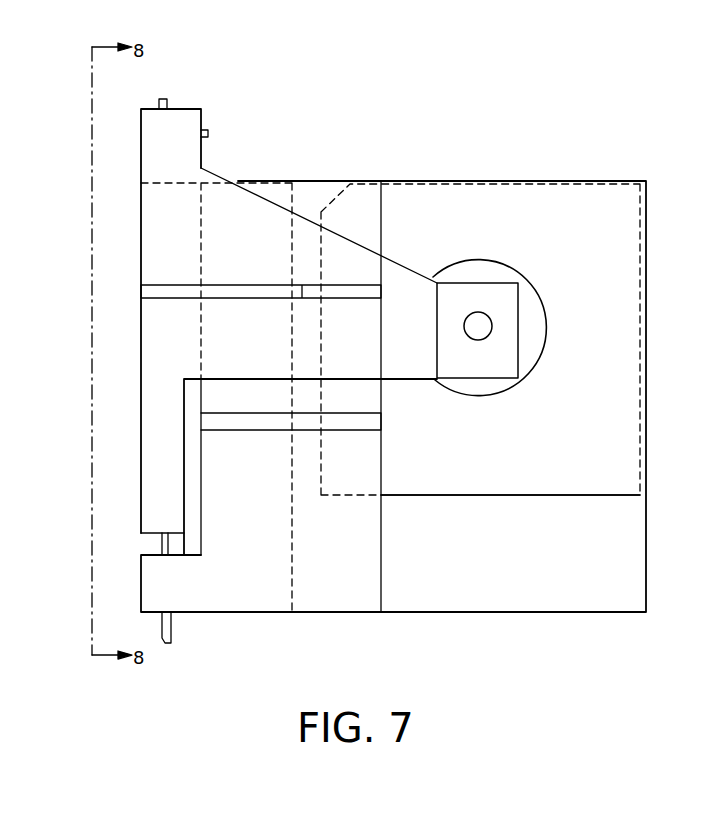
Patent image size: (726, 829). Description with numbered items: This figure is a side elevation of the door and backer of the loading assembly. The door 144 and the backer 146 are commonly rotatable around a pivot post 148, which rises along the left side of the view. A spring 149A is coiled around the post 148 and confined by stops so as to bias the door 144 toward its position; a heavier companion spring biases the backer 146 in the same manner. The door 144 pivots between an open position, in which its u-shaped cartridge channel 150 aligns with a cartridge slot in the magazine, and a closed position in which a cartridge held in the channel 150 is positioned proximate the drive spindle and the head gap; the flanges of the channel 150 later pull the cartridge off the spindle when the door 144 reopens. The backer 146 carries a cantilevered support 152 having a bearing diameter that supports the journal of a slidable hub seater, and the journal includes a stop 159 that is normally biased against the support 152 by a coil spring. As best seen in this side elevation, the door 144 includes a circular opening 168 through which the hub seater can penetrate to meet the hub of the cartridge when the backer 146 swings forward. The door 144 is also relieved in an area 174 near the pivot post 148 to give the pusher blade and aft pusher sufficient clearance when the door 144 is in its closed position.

The door 144 is at (617, 560).
The backer 146 is at (258, 361).
The pivot post 148 is at (163, 98).
The spring 149A is at (208, 130).
The u-shaped cartridge channel 150 is at (618, 493).
The cantilevered support 152 is at (456, 297).
The stop 159 is at (484, 331).
The circular opening 168 is at (543, 304).
The relieved area 174 is at (250, 230).